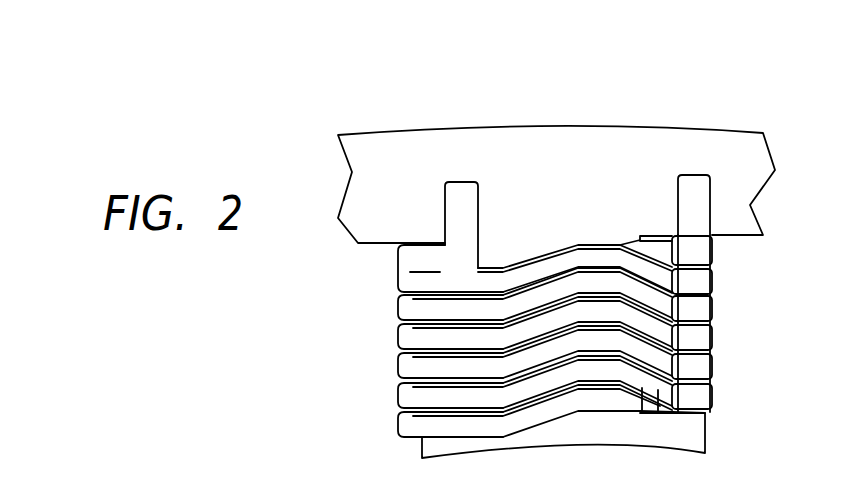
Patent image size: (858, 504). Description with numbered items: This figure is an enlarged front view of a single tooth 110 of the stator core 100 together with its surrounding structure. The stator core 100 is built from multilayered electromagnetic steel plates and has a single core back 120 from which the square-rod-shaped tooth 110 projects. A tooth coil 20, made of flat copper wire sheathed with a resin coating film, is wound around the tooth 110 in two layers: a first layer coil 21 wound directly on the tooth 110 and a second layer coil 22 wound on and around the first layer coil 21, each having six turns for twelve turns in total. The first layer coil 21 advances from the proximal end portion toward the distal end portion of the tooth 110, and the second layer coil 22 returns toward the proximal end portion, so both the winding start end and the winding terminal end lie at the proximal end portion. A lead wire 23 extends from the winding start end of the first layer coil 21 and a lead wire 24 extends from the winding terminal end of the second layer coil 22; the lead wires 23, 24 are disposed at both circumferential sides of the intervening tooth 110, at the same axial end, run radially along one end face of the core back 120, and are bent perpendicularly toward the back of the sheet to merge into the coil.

The stator core 100 is at (742, 92).
The core back 120 is at (536, 137).
The tooth 110 is at (705, 434).
The tooth coil 20 is at (610, 336).
The first layer coil 21 is at (666, 254).
The second layer coil 22 is at (705, 368).
The lead wire 23 is at (463, 190).
The lead wire 24 is at (698, 190).